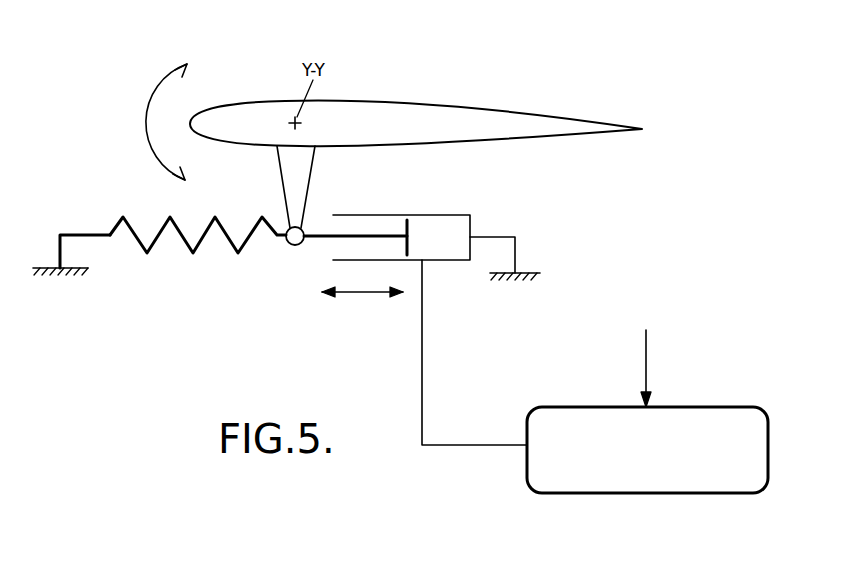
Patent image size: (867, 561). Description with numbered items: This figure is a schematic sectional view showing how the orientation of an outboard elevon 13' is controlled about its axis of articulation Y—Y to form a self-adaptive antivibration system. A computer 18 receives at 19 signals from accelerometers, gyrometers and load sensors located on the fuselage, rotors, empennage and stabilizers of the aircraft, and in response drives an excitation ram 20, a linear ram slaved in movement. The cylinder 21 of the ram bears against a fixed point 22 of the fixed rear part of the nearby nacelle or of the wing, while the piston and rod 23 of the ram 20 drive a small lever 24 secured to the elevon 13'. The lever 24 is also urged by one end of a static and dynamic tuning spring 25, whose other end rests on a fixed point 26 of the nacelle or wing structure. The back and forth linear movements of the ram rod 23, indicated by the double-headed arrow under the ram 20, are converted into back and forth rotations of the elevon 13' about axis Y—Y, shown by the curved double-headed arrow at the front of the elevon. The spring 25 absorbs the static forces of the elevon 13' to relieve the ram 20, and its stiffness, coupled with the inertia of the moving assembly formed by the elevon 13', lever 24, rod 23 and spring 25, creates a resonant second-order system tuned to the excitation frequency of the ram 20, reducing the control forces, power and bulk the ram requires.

The outboard elevon 13' is at (416, 90).
The lever 24 is at (302, 173).
The tuning spring 25 is at (225, 238).
The fixed point 26 is at (78, 273).
The rod 23 is at (330, 238).
The cylinder 21 is at (463, 212).
The fixed point 22 is at (527, 272).
The excitation ram 20 is at (429, 266).
The computer 18 is at (563, 420).
The signal input 19 is at (645, 352).